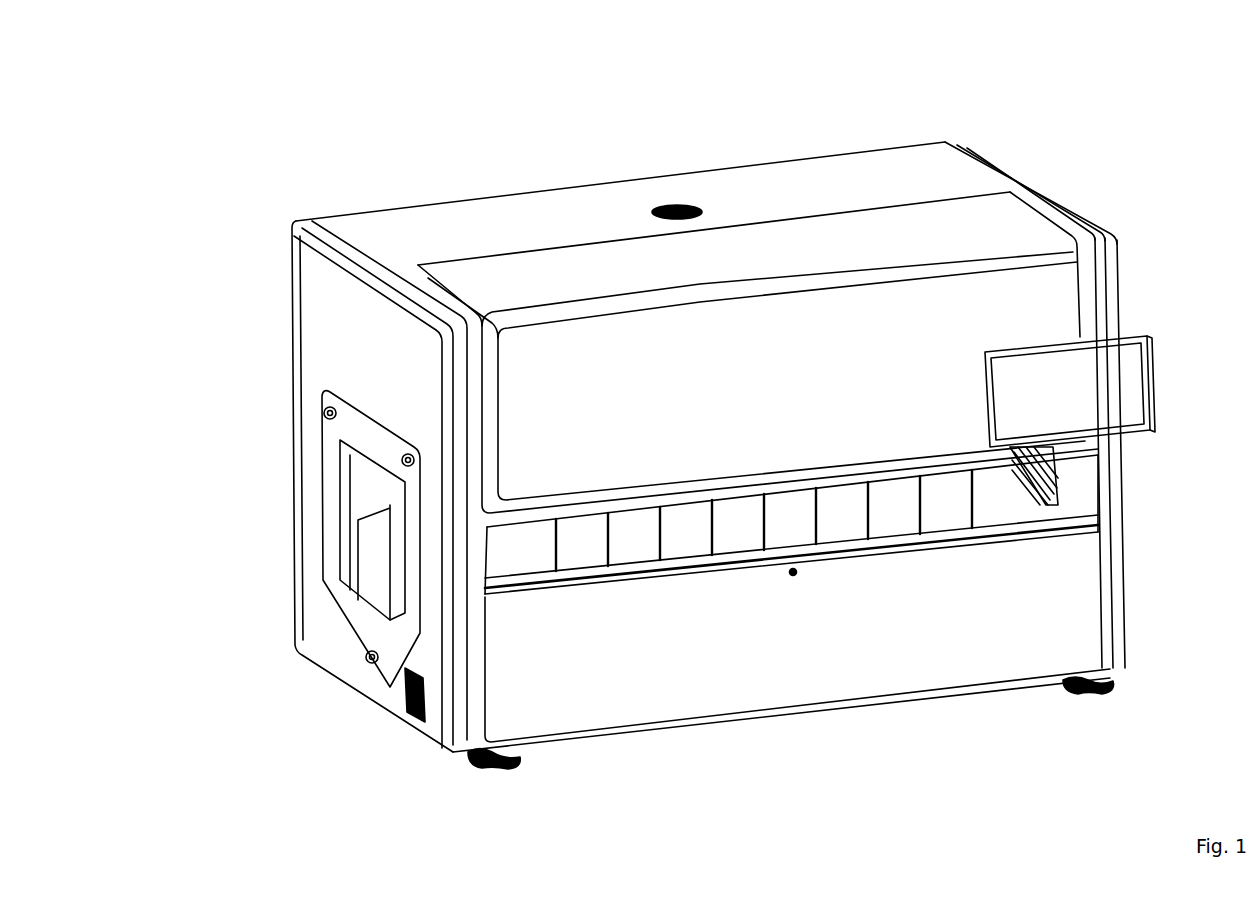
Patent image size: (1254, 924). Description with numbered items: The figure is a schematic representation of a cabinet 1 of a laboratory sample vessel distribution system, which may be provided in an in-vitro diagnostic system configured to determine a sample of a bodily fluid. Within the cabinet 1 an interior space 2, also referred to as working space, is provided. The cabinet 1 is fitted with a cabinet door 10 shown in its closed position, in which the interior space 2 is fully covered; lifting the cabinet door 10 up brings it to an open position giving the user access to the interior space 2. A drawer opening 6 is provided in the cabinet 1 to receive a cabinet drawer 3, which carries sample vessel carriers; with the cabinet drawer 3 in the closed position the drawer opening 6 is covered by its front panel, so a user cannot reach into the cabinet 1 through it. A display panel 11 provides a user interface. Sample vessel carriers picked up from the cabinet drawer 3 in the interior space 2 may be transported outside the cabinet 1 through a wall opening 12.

The cabinet 1 is at (428, 211).
The interior space 2 is at (927, 248).
The cabinet drawer 3 is at (632, 547).
The drawer opening 6 is at (650, 575).
The cabinet door 10 is at (514, 370).
The display panel 11 is at (1108, 390).
The wall opening 12 is at (360, 475).